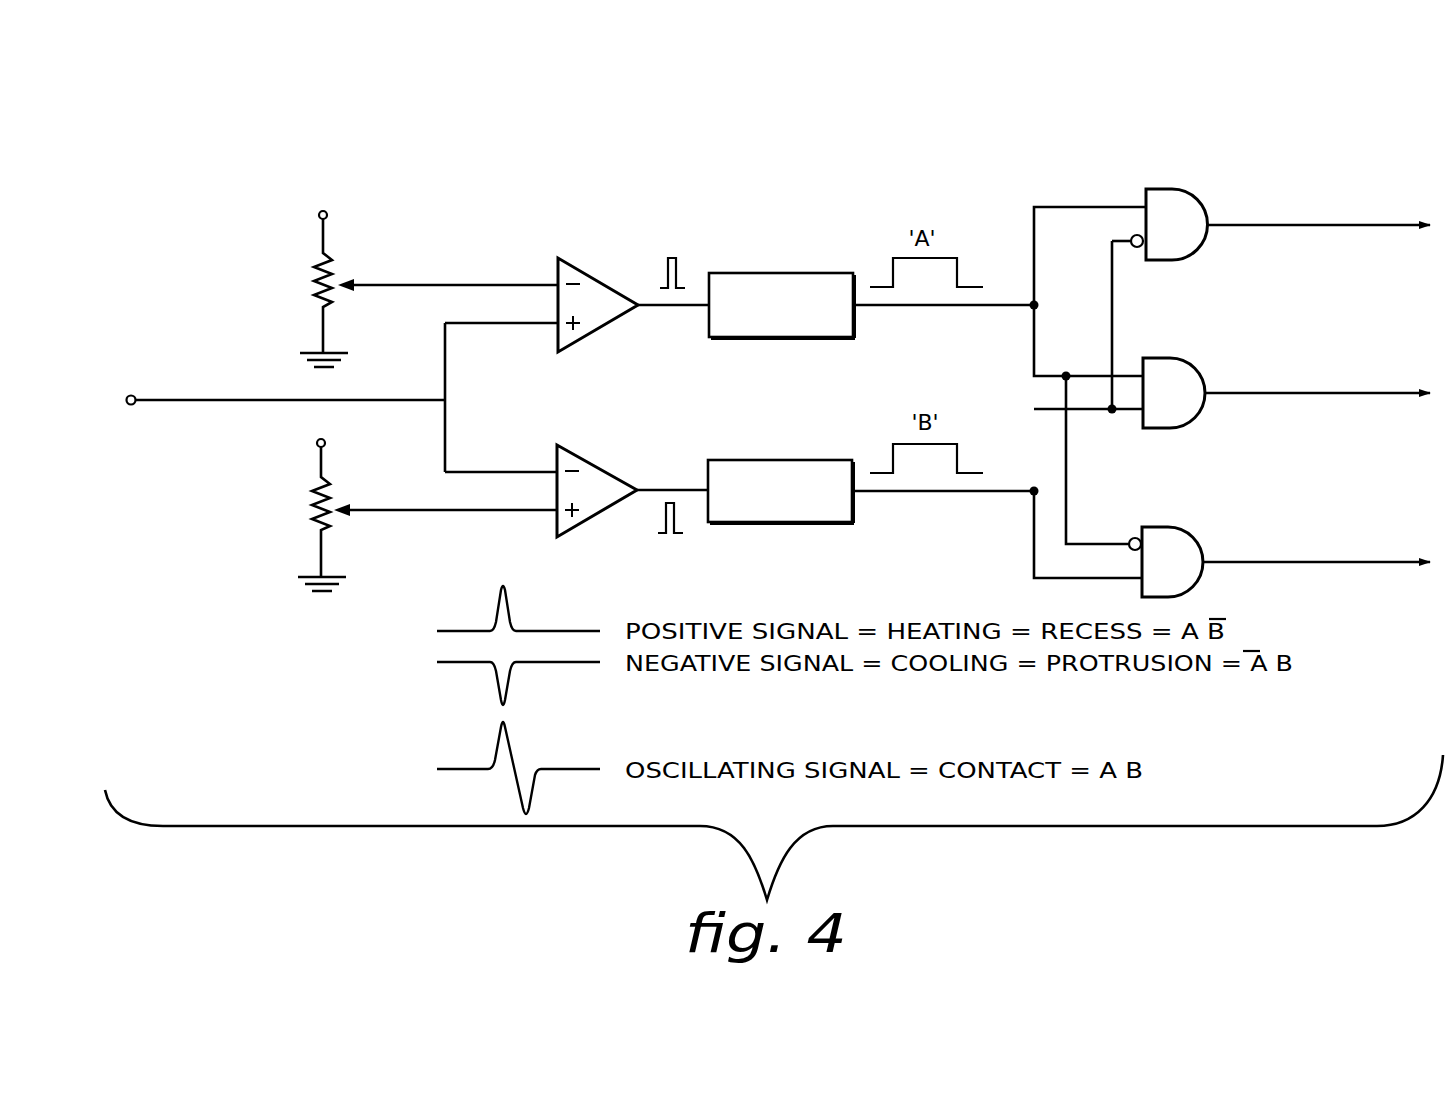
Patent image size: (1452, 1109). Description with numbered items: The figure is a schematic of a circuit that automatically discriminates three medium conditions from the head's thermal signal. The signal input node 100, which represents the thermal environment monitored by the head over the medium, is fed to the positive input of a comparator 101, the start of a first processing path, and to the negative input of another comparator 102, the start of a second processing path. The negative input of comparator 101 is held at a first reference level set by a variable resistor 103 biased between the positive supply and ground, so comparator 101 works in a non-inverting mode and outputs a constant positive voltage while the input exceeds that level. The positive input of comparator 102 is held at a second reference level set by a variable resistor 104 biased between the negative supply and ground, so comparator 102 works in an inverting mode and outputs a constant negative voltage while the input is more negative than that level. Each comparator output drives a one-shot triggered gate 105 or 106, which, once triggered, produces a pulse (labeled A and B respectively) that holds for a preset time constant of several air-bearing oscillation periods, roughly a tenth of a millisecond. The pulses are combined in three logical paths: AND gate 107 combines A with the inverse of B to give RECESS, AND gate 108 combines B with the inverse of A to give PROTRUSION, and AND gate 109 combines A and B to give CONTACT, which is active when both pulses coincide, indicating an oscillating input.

The signal input node 100 is at (230, 401).
The comparator 101 is at (605, 281).
The comparator 102 is at (597, 519).
The variable resistor 103 is at (340, 259).
The variable resistor 104 is at (339, 522).
The one-shot triggered gate 105 is at (777, 338).
The one-shot triggered gate 106 is at (843, 523).
The AND gate 107 is at (1172, 189).
The AND gate 108 is at (1182, 527).
The AND gate 109 is at (1170, 358).